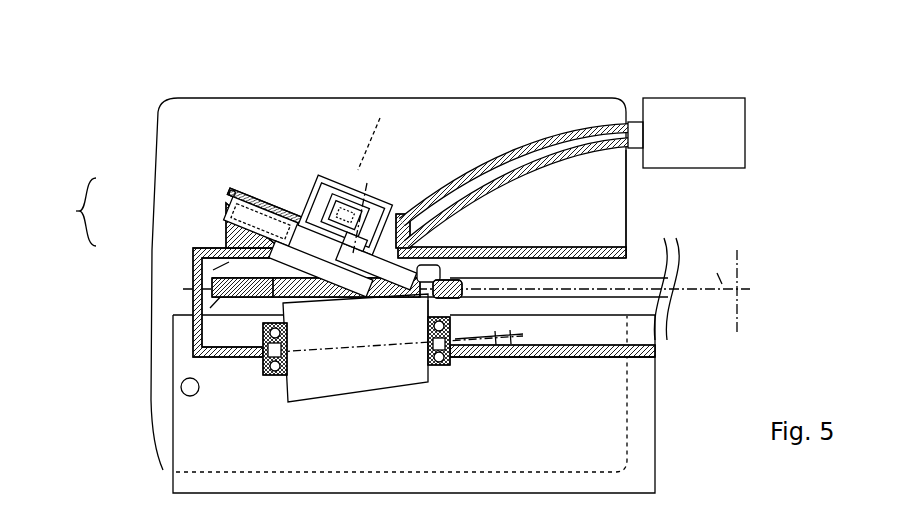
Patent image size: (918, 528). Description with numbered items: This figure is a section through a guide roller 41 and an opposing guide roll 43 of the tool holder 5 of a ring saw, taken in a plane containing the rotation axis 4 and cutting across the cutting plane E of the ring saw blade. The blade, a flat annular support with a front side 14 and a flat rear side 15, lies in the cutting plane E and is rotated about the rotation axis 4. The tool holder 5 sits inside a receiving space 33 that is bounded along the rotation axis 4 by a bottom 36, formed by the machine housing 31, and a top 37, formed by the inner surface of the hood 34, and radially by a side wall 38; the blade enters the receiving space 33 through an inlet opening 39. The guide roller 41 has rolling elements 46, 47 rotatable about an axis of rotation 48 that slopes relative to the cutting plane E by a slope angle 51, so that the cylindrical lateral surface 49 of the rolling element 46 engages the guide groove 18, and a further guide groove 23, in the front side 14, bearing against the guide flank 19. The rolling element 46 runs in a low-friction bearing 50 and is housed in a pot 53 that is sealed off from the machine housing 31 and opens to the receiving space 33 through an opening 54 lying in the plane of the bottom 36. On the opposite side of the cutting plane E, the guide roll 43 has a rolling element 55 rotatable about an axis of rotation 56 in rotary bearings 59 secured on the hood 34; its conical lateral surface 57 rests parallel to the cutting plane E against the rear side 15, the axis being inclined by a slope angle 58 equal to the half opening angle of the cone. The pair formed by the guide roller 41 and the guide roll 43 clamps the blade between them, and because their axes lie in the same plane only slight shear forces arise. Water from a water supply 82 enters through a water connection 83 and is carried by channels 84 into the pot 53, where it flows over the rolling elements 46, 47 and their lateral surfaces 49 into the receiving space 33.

The rotation axis 4 is at (737, 250).
The tool holder 5 is at (69, 210).
The front side 14 is at (224, 272).
The rear side 15 is at (205, 322).
The guide groove 18 is at (455, 238).
The guide flank 19 is at (441, 362).
The guide groove 23 is at (418, 243).
The machine housing 31 is at (628, 236).
The receiving space 33 is at (550, 268).
The hood 34 is at (658, 427).
The bottom 36 is at (518, 246).
The top 37 is at (567, 350).
The side wall 38 is at (192, 280).
The inlet opening 39 is at (655, 262).
The guide roller 41 is at (198, 206).
The guide roll 43 is at (222, 278).
The rolling element 46 is at (253, 213).
The rolling element 47 is at (330, 245).
The axis of rotation 48 is at (370, 174).
The lateral surface 49 is at (230, 188).
The low-friction bearing 50 is at (334, 180).
The slope angle 51 is at (358, 247).
The pot 53 is at (360, 270).
The opening 54 is at (278, 250).
The rolling element 55 is at (407, 372).
The axis of rotation 56 is at (514, 355).
The lateral surface 57 is at (339, 301).
The slope angle 58 is at (494, 343).
The rotary bearings 59 is at (442, 370).
The water supply 82 is at (694, 133).
The water connection 83 is at (640, 132).
The channels 84 is at (500, 167).
The cutting plane E is at (723, 287).